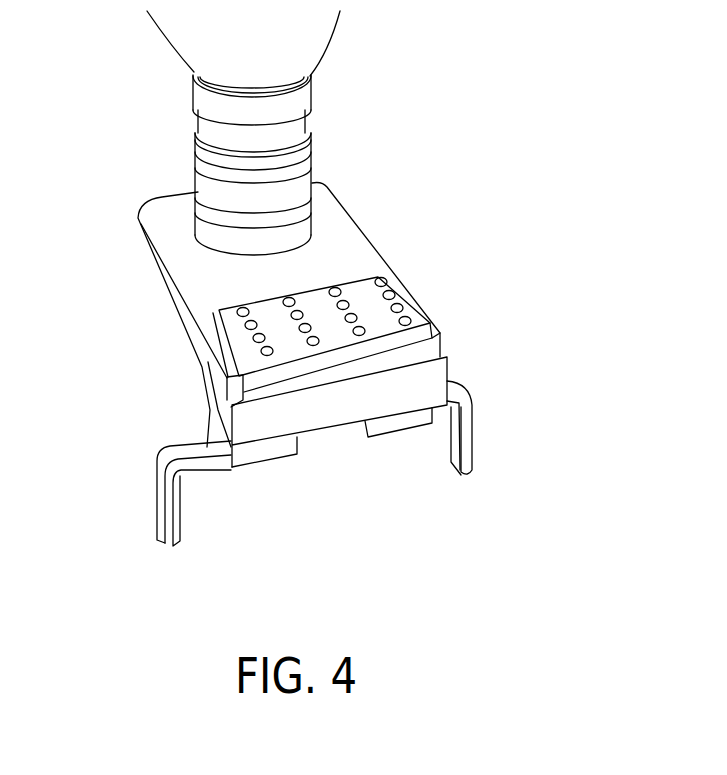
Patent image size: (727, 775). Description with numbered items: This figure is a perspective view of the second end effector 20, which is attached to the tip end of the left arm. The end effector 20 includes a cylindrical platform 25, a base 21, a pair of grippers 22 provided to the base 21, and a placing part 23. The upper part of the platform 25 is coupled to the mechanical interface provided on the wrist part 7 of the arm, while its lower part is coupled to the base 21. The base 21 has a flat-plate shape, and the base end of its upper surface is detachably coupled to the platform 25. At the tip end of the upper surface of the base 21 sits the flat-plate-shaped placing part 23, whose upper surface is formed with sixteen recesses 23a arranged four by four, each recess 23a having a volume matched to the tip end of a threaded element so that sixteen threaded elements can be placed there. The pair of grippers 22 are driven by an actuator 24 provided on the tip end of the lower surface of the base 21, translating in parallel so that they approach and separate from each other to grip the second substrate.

The wrist part 7 is at (317, 33).
The end effector 20 is at (443, 213).
The base 21 is at (365, 257).
The pair of grippers 22 is at (177, 545).
The placing part 23 is at (403, 297).
The recesses 23a is at (257, 351).
The actuator 24 is at (342, 427).
The platform 25 is at (300, 187).